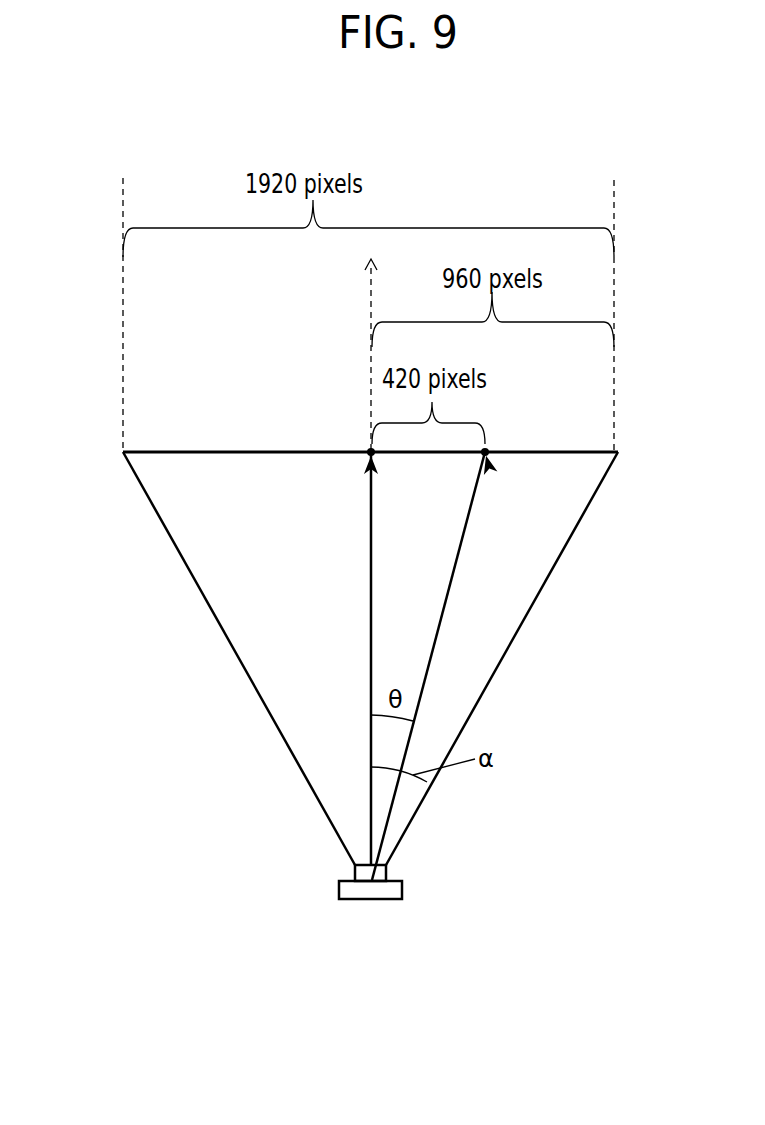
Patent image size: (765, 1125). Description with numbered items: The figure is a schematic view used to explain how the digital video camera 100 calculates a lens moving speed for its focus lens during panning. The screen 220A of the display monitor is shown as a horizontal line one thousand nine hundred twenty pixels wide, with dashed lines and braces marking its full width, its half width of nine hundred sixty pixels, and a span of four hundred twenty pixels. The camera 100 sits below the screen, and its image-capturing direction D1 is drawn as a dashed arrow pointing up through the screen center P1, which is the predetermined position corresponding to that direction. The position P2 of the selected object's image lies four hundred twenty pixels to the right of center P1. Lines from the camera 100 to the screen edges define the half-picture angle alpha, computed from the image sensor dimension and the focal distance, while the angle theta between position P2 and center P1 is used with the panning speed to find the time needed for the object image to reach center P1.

The screen 220A is at (167, 453).
The digital video camera 100 is at (380, 888).
The image-capturing direction D1 is at (368, 380).
The center of screen P1 is at (367, 455).
The position of image of selected object P2 is at (488, 456).